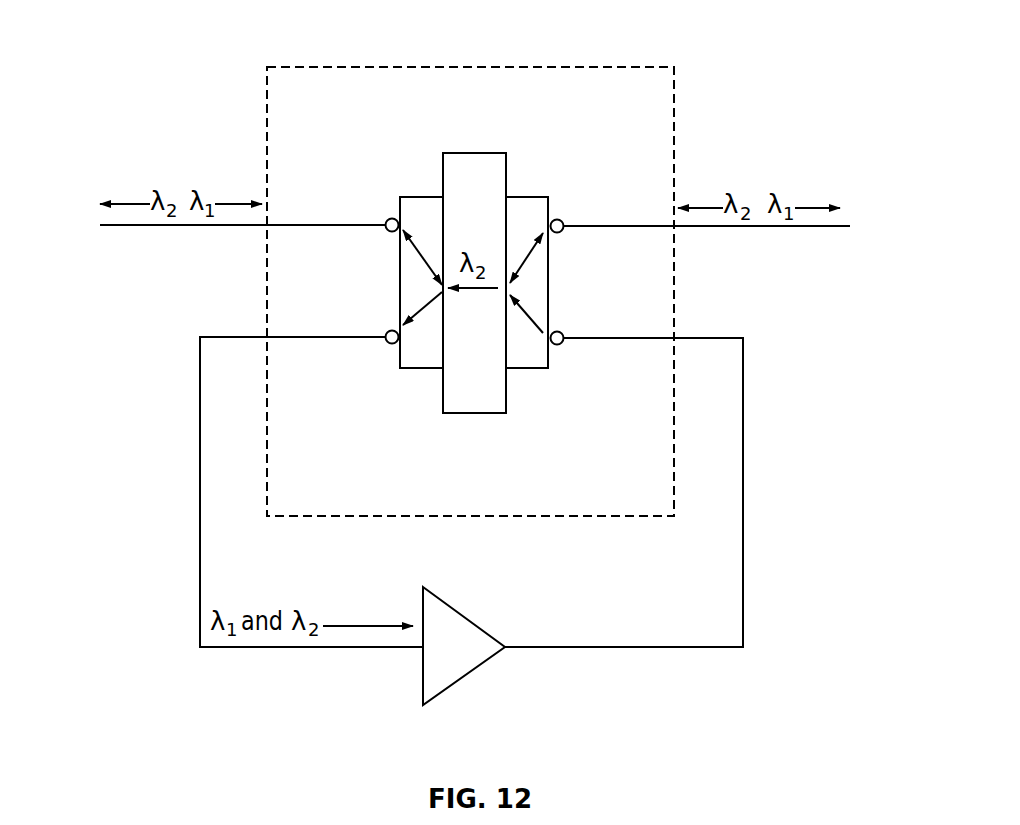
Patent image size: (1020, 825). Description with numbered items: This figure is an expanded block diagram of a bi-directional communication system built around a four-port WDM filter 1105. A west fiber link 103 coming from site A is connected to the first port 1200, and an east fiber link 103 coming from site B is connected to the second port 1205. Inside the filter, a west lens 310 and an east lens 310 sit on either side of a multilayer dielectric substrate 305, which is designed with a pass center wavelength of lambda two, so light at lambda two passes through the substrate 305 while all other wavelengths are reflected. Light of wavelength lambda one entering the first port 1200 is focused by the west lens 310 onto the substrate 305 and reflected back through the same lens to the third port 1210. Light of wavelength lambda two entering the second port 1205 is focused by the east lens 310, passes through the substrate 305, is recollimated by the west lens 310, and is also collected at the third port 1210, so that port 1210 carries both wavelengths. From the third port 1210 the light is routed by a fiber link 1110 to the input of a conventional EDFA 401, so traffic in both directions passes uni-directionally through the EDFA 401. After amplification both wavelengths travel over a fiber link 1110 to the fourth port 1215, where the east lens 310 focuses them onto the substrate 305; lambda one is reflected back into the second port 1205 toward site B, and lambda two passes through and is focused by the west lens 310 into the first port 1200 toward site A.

The four-port WDM filter 1105 is at (592, 67).
The lens 310 is at (557, 412).
The multilayer dielectric substrate 305 is at (443, 402).
The port 1 1200 is at (385, 221).
The port 3 1210 is at (385, 333).
The port 2 1205 is at (563, 230).
The port 4 1215 is at (563, 342).
The fiber link 103 is at (133, 225).
The fiber link 1110 is at (768, 470).
The EDFA 401 is at (472, 622).